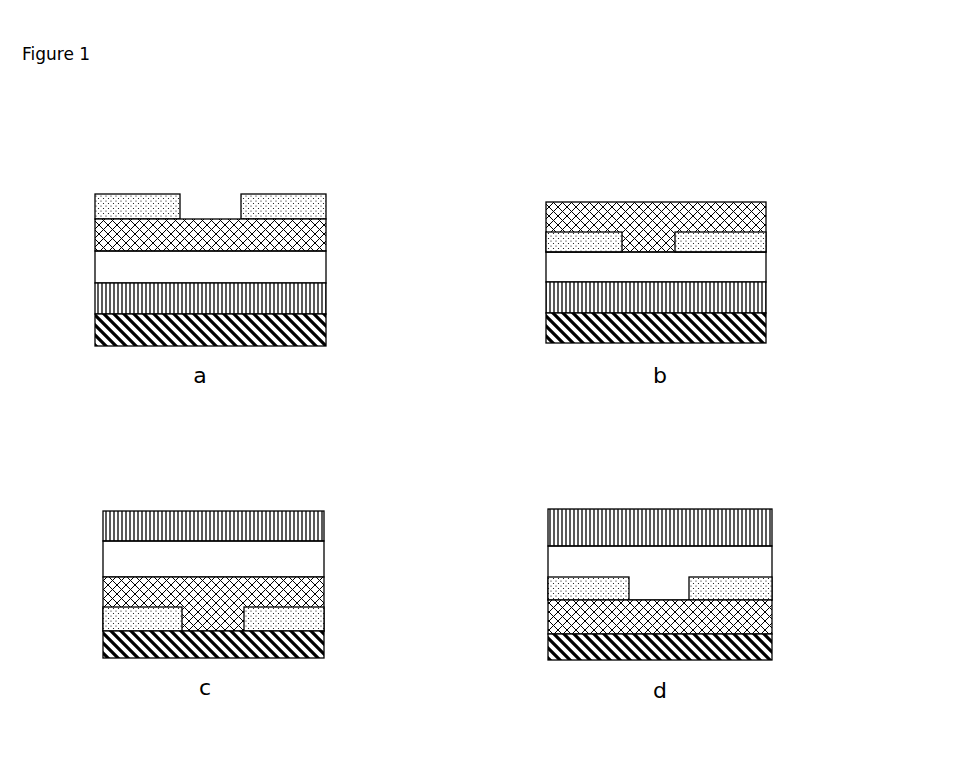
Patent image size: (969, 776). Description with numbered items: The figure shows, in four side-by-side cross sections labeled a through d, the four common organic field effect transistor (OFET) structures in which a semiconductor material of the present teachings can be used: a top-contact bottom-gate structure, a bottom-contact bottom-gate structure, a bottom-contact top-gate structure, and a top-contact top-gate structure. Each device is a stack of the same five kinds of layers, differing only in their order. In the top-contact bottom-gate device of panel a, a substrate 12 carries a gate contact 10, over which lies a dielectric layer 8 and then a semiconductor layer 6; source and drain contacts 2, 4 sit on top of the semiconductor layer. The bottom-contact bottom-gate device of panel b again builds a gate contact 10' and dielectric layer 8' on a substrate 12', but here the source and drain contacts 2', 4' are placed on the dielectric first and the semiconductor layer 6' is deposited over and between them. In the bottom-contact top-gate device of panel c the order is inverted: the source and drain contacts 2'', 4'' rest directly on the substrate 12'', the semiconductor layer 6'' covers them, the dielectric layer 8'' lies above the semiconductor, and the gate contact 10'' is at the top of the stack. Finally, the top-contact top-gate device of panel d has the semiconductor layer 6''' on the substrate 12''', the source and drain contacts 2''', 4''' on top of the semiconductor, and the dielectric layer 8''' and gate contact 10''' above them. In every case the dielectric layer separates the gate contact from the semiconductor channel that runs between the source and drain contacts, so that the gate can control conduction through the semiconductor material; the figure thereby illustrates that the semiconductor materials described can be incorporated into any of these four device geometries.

The source contact 2 is at (137, 170).
The drain contact 4 is at (292, 170).
The semiconductor layer 6 is at (254, 229).
The dielectric layer 8 is at (254, 273).
The gate contact 10 is at (258, 309).
The substrate 12 is at (210, 370).
The source contact 2' is at (564, 202).
The drain contact 4' is at (764, 237).
The semiconductor layer 6' is at (656, 206).
The dielectric layer 8' is at (703, 277).
The gate contact 10' is at (706, 306).
The substrate 12' is at (656, 368).
The source contact 2'' is at (111, 600).
The drain contact 4'' is at (310, 625).
The semiconductor layer 6'' is at (239, 595).
The dielectric layer 8'' is at (240, 550).
The gate contact 10'' is at (213, 502).
The substrate 12'' is at (213, 666).
The source contact 2''' is at (558, 579).
The drain contact 4''' is at (765, 582).
The semiconductor layer 6''' is at (695, 611).
The dielectric layer 8''' is at (695, 567).
The gate contact 10''' is at (660, 513).
The substrate 12''' is at (660, 666).